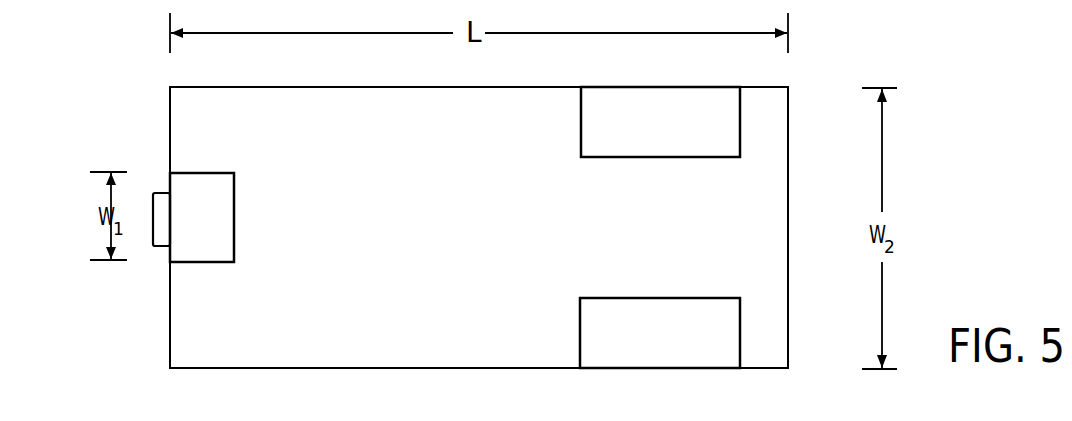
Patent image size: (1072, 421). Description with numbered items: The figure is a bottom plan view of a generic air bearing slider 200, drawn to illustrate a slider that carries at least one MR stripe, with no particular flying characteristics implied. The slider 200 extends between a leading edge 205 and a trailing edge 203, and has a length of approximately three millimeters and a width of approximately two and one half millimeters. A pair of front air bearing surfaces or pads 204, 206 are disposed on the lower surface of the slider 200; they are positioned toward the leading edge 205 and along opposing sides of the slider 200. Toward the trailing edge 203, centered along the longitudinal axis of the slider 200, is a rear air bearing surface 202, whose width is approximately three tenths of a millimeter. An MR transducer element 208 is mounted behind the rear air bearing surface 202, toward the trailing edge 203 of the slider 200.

The air bearing slider 200 is at (442, 211).
The rear air bearing surface 202 is at (234, 245).
The trailing edge 203 is at (170, 324).
The front air bearing pad 204 is at (657, 298).
The leading edge 205 is at (788, 118).
The front air bearing pad 206 is at (652, 157).
The MR transducer element 208 is at (153, 193).